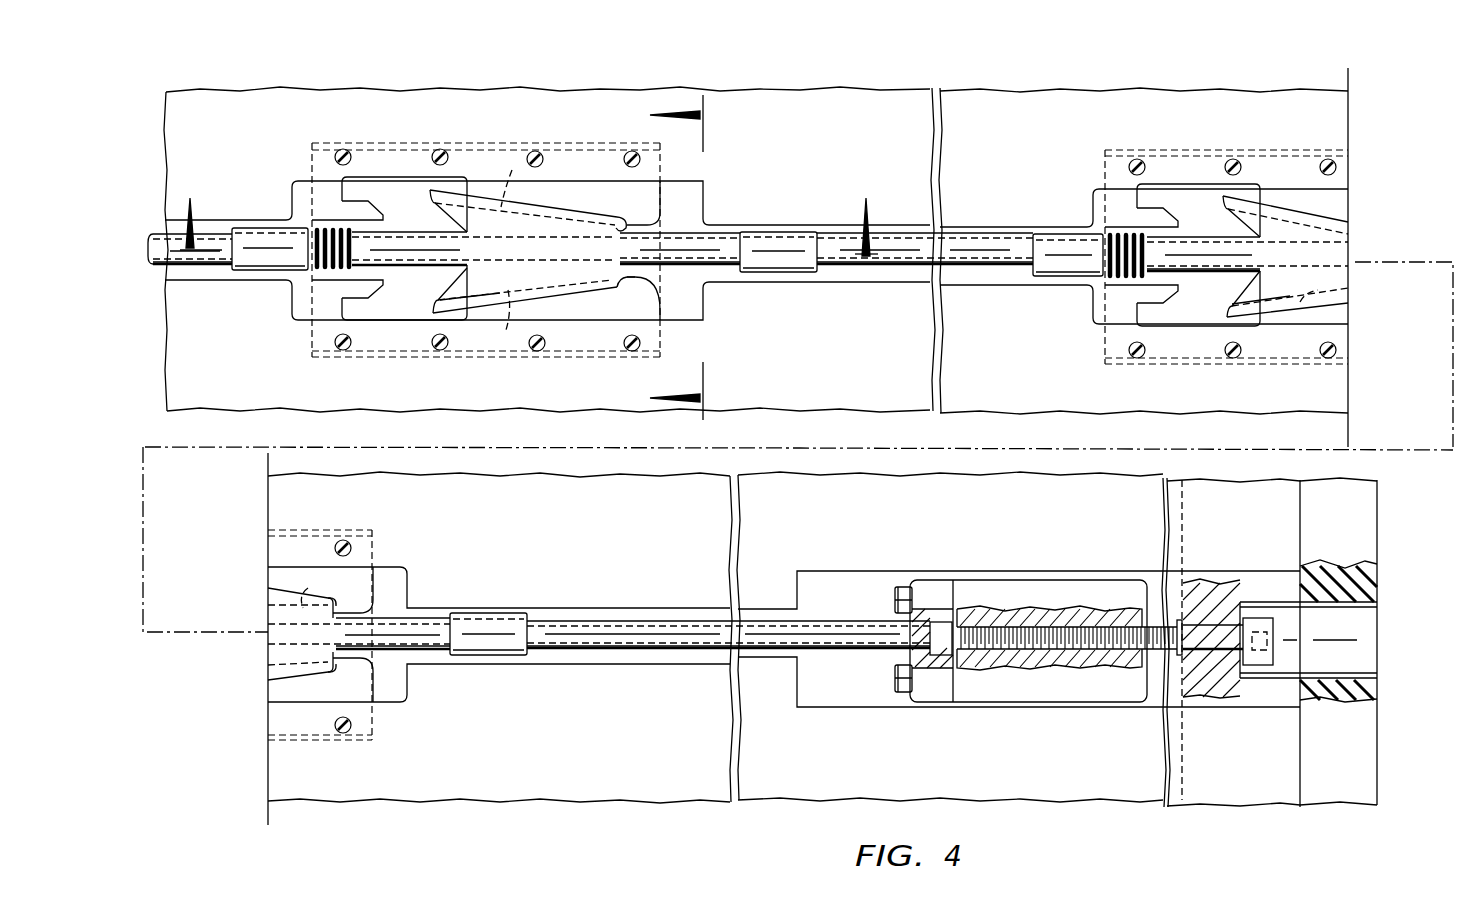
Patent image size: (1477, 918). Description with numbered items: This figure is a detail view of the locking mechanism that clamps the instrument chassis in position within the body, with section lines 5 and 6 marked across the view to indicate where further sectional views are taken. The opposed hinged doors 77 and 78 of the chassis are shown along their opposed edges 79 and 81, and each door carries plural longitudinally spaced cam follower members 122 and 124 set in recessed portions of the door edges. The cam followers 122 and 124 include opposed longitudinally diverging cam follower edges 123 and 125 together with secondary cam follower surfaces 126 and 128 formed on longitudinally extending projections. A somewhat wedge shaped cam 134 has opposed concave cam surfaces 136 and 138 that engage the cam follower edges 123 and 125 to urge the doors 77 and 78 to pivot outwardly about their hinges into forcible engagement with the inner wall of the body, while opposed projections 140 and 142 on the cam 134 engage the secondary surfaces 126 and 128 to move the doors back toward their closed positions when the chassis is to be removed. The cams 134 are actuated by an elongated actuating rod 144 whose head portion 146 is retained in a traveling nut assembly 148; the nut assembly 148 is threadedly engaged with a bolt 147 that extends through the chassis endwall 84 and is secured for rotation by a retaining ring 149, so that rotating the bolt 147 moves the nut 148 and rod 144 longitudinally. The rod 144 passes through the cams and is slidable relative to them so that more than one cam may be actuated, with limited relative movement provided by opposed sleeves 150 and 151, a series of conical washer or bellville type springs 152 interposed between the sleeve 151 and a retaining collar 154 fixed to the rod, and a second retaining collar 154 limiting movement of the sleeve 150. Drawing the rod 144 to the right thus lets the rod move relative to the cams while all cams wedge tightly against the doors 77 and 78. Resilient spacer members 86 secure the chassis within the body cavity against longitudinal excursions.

The section line 5- 5 is at (529, 216).
The section line 6- 6 is at (689, 257).
The door 77 is at (758, 88).
The door 78 is at (834, 412).
The door edge 79 is at (830, 227).
The door edge 81 is at (866, 266).
The chassis endwall 84 is at (1218, 701).
The resilient spacer member 86 is at (1327, 806).
The cam follower member 122 is at (594, 196).
The cam follower edge 123 is at (616, 217).
The cam follower member 124 is at (588, 309).
The cam follower edge 125 is at (536, 295).
The secondary cam follower surface 126 is at (384, 200).
The secondary cam follower surface 128 is at (378, 300).
The cam 134 is at (613, 288).
The concave cam surface 136 is at (503, 200).
The concave cam surface 138 is at (508, 300).
The projection 140 is at (430, 203).
The projection 142 is at (395, 256).
The actuating rod 144 is at (838, 622).
The head portion 146 is at (925, 645).
The bolt 147 is at (1273, 650).
The traveling nut assembly 148 is at (1045, 580).
The retaining ring 149 is at (1168, 661).
The sleeve 150 is at (690, 233).
The sleeve 151 is at (455, 300).
The conical washer spring 152 is at (335, 272).
The retaining collar 154 is at (278, 232).